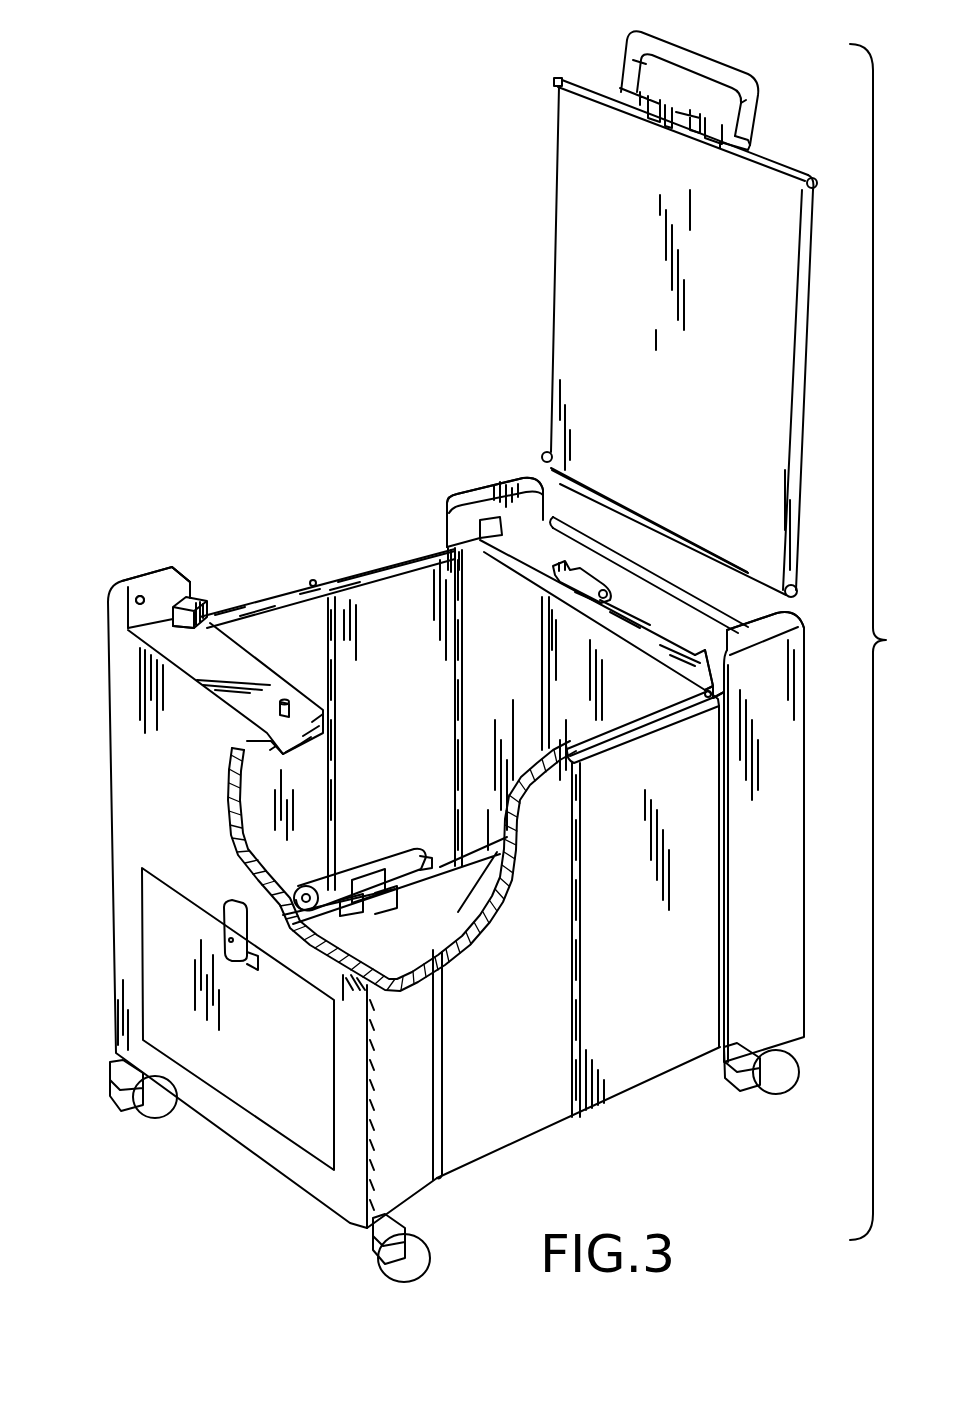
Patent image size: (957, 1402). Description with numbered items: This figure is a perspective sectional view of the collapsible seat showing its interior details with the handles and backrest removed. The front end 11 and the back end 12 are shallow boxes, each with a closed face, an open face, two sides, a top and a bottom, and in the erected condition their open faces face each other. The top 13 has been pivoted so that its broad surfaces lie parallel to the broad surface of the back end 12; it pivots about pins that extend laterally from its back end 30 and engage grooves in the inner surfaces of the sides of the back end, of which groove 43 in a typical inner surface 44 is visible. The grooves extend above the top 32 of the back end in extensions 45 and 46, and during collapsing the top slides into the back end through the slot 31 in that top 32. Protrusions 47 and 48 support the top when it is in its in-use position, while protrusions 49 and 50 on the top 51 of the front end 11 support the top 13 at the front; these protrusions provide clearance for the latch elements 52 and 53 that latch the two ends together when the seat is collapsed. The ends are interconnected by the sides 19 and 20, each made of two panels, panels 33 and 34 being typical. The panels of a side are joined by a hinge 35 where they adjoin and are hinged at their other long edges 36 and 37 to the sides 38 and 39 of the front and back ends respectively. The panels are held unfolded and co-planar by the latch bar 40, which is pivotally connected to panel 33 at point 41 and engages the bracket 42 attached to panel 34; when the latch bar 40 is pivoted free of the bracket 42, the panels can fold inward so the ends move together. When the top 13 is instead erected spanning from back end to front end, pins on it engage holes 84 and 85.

The front end 11 is at (128, 821).
The back end 12 is at (778, 906).
The top 13 is at (586, 283).
The side 19 is at (658, 1050).
The side 20 is at (231, 612).
The back end of the top 30 is at (714, 552).
The slot 31 is at (473, 500).
The top of the back end 32 is at (772, 630).
The panel 33 is at (275, 602).
The panel 34 is at (367, 572).
The hinge 35 is at (312, 580).
The long edge 36 is at (450, 553).
The long edge 37 is at (197, 575).
The side of the front end 38 is at (520, 492).
The side of the back end 39 is at (119, 582).
The latch bar 40 is at (410, 856).
The pivot point 41 is at (306, 886).
The bracket 42 is at (372, 878).
The groove 43 is at (532, 473).
The inner surface 44 is at (497, 503).
The extension 45 is at (463, 492).
The extension 46 is at (806, 664).
The protrusion 47 is at (480, 517).
The protrusion 48 is at (733, 657).
The protrusion 49 is at (172, 616).
The protrusion 50 is at (119, 648).
The top of the front end 51 is at (203, 663).
The latch element 52 is at (295, 706).
The latch element 53 is at (597, 604).
The hole 84 is at (138, 596).
The hole 85 is at (127, 556).